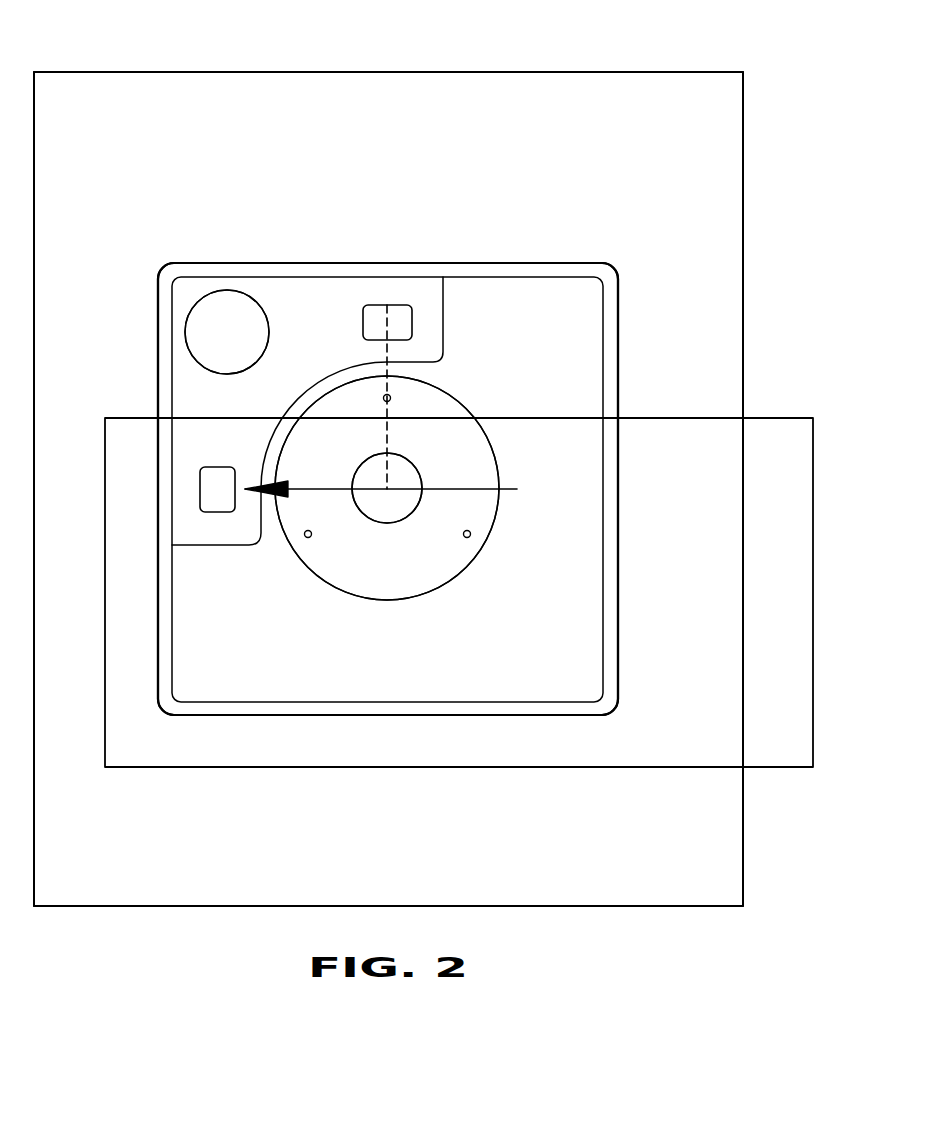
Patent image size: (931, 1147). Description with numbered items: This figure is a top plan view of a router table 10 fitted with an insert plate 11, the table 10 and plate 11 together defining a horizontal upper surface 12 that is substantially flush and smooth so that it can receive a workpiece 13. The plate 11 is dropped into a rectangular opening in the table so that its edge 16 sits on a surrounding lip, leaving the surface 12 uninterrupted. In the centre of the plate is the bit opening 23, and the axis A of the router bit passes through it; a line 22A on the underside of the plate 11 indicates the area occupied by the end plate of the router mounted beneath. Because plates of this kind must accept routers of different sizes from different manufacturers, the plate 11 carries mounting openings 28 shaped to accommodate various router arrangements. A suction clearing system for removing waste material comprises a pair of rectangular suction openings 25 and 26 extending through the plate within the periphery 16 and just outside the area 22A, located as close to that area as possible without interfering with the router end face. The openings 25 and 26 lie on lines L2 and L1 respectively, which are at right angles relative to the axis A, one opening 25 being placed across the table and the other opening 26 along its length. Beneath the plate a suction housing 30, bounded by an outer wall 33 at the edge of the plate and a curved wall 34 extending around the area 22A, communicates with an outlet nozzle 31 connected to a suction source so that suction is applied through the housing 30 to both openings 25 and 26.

The router table 10 is at (528, 100).
The horizontal upper surface 12 is at (204, 149).
The workpiece 13 is at (785, 488).
The edge of the plate 16 is at (557, 264).
The insert plate 11 is at (528, 308).
The outer wall 33 is at (168, 352).
The suction housing 30 is at (275, 297).
The outlet nozzle 31 is at (200, 308).
The suction opening 26 is at (402, 310).
The curved wall 34 is at (318, 387).
The line indicating area of end plate 22A is at (501, 502).
The bit opening 23 is at (417, 463).
The axis of the bit A is at (387, 488).
The line L1 is at (387, 370).
The line L2 is at (332, 489).
The suction opening 25 is at (222, 512).
The mounting openings 28 is at (383, 398).